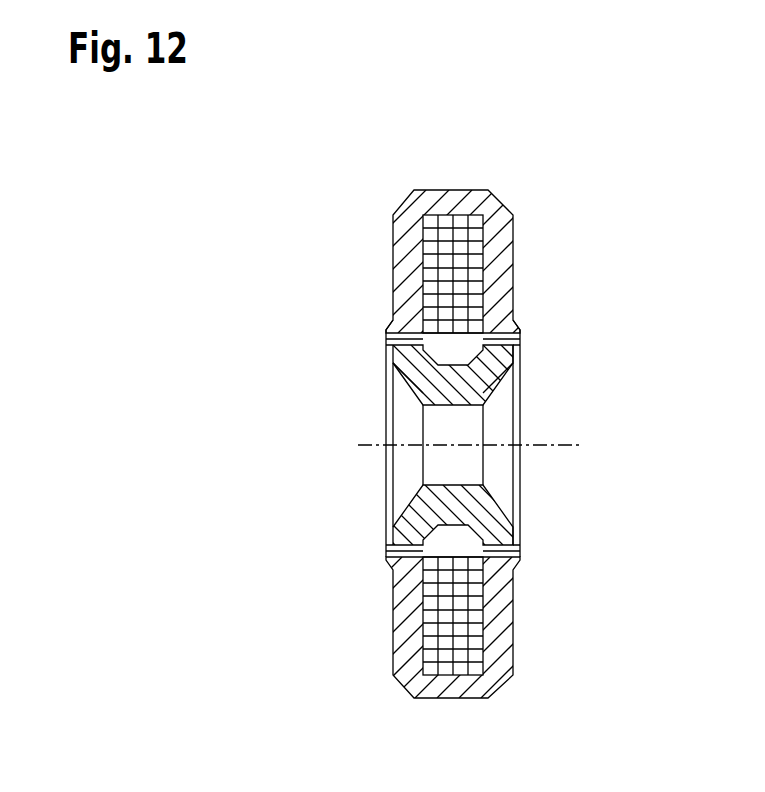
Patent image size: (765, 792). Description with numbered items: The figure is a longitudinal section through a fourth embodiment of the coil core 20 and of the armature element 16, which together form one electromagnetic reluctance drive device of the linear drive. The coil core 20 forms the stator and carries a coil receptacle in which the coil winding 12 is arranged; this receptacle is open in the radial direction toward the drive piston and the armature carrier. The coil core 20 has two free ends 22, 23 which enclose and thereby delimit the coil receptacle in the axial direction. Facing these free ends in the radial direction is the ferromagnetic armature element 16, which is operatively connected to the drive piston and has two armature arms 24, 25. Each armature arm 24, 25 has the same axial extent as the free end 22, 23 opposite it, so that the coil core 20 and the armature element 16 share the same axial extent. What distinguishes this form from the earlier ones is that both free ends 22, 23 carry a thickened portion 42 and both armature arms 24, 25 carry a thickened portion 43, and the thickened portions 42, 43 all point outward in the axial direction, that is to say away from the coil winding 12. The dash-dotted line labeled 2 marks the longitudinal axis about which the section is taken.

The coil core 20 is at (363, 228).
The coil winding 12 is at (455, 230).
The armature element 16 is at (368, 395).
The free end 22 is at (393, 322).
The free end 23 is at (515, 322).
The thickened portion 42 is at (386, 333).
The thickened portion 43 is at (386, 348).
The armature arm 24 is at (386, 362).
The armature arm 25 is at (520, 362).
The longitudinal axis 2 is at (548, 446).